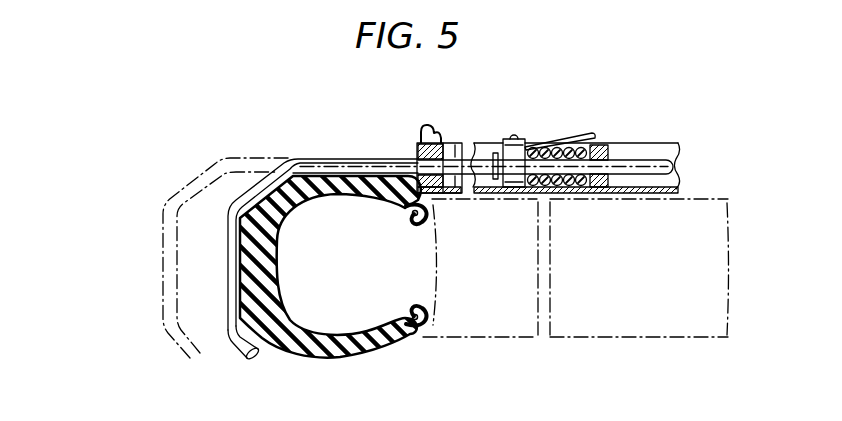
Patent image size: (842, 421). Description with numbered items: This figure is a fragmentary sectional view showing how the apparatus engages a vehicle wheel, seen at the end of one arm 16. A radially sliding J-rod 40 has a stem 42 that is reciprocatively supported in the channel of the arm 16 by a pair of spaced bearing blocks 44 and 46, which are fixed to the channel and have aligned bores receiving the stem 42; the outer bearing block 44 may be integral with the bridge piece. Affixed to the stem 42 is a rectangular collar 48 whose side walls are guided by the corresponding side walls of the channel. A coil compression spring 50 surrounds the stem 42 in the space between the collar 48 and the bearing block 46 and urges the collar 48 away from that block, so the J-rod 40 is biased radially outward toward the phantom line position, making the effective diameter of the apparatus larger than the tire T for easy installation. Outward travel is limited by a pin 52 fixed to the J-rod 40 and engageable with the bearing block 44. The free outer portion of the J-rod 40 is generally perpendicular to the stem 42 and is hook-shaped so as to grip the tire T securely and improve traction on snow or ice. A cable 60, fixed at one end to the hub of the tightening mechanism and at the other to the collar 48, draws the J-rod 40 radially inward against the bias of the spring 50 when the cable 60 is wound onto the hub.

The arm 16 is at (644, 204).
The J-rod 40 is at (220, 264).
The stem 42 is at (484, 158).
The outer bearing block 44 is at (415, 152).
The bearing block 46 is at (610, 160).
The rectangular collar 48 is at (517, 152).
The coil compression spring 50 is at (562, 185).
The pin 52 is at (500, 181).
The cable 60 is at (583, 130).
The tire T is at (372, 345).